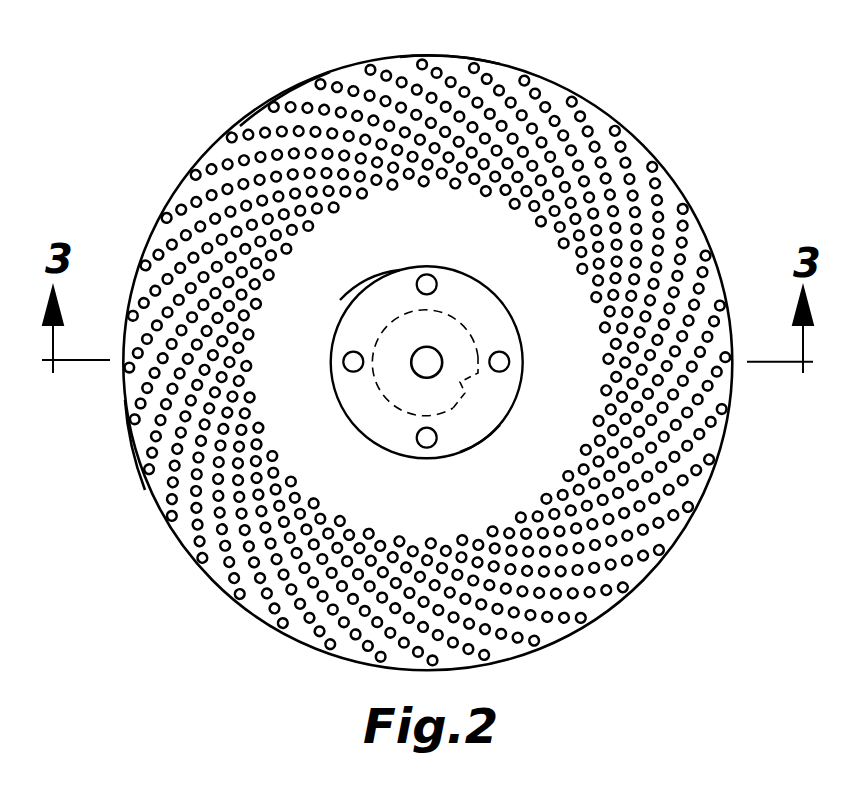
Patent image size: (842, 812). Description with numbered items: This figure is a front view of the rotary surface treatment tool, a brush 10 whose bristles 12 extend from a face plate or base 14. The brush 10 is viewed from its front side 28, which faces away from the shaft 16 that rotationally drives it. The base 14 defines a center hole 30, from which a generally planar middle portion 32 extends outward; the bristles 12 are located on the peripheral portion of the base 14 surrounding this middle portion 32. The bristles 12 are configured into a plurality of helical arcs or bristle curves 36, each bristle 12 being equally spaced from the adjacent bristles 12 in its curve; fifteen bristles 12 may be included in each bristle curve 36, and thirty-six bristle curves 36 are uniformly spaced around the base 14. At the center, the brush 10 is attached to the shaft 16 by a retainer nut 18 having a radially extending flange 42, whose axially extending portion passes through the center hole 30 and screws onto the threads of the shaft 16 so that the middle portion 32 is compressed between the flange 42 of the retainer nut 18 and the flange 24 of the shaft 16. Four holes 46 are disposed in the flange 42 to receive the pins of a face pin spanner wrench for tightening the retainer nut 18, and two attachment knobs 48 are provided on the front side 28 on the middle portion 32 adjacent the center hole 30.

The brush 10 is at (653, 102).
The bristles 12 is at (196, 172).
The base 14 is at (305, 85).
The shaft 16 is at (417, 368).
The retainer nut 18 is at (518, 322).
The flange 24 is at (553, 92).
The front side 28 is at (451, 64).
The center hole 30 is at (490, 387).
The middle portion 32 is at (356, 268).
The bristle curves 36 is at (142, 468).
The radially extending flange 42 is at (482, 430).
The holes 46 is at (428, 277).
The attachment knobs 48 is at (348, 359).